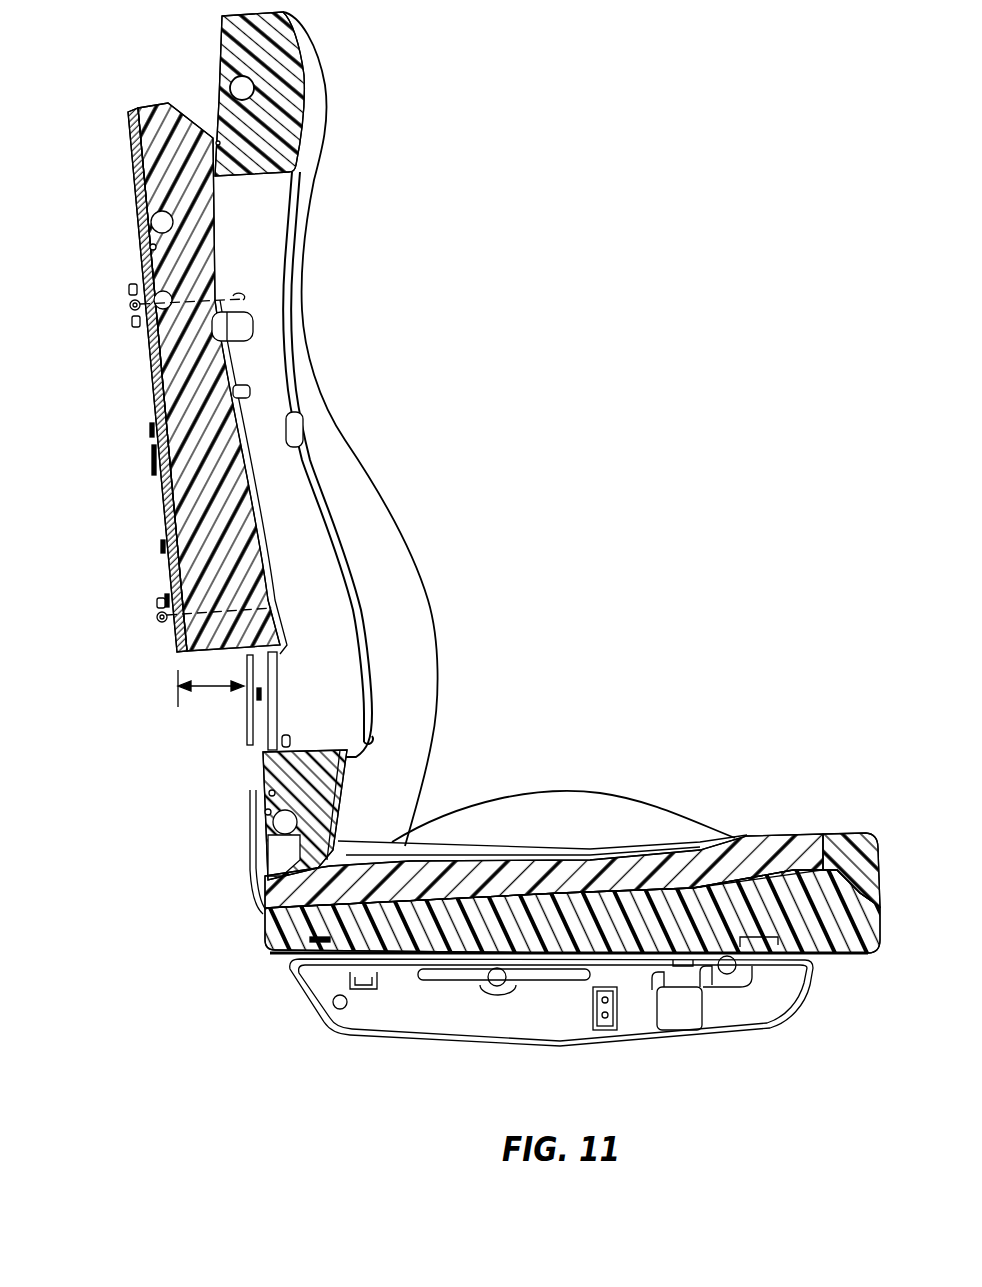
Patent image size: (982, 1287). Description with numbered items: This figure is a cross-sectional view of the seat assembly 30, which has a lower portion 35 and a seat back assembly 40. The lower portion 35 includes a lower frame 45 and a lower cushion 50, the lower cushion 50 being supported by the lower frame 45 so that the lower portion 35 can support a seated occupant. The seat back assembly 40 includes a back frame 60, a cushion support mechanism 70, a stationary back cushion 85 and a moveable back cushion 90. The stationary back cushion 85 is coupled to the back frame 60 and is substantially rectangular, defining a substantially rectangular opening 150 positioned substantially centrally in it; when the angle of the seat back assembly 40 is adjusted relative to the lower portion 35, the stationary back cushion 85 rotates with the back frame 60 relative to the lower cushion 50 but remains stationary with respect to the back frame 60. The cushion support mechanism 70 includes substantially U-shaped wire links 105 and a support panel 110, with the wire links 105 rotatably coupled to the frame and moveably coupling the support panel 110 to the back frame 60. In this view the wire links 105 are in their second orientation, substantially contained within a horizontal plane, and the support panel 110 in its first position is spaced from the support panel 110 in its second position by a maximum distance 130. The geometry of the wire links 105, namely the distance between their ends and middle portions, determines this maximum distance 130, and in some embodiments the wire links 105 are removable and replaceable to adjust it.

The seat assembly 30 is at (641, 410).
The lower portion 35 is at (746, 790).
The seat back assembly 40 is at (413, 320).
The lower frame 45 is at (423, 1013).
The lower cushion 50 is at (810, 862).
The back frame 60 is at (230, 86).
The cushion support mechanism 70 is at (98, 274).
The stationary back cushion 85 is at (287, 100).
The moveable back cushion 90 is at (190, 257).
The wire links 105 is at (130, 305).
The support panel 110 is at (163, 407).
The maximum distance 130 is at (214, 690).
The opening 150 is at (260, 172).